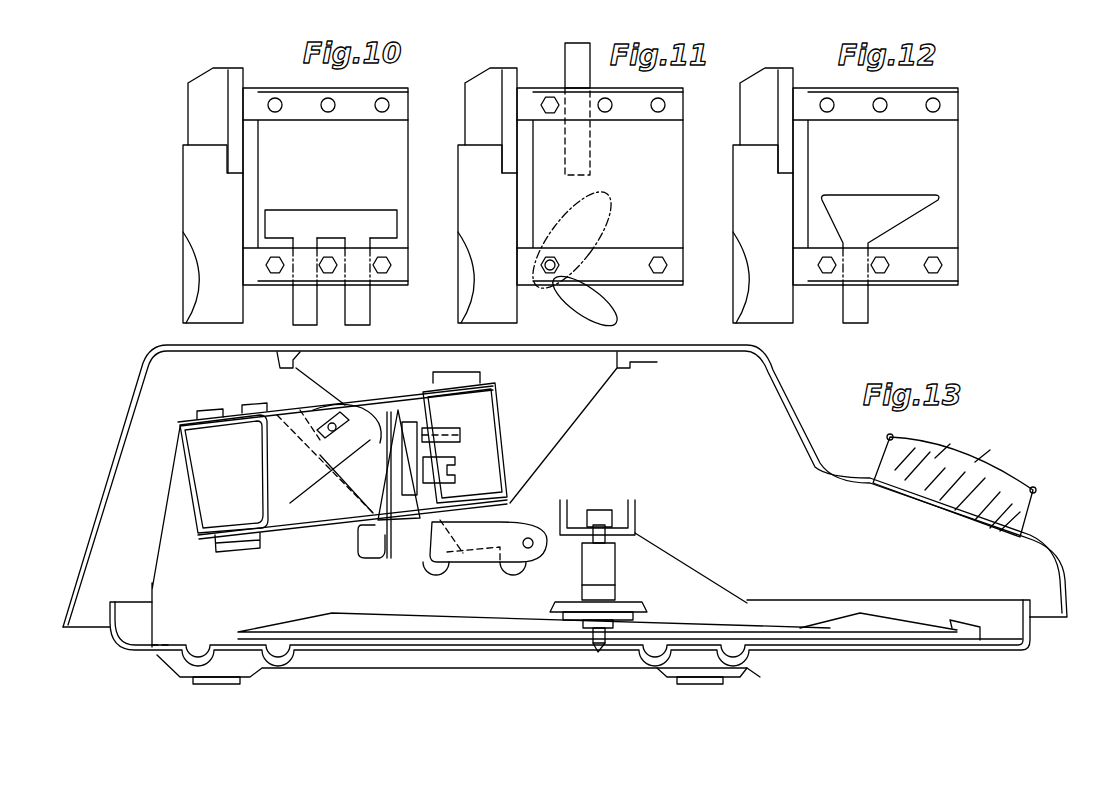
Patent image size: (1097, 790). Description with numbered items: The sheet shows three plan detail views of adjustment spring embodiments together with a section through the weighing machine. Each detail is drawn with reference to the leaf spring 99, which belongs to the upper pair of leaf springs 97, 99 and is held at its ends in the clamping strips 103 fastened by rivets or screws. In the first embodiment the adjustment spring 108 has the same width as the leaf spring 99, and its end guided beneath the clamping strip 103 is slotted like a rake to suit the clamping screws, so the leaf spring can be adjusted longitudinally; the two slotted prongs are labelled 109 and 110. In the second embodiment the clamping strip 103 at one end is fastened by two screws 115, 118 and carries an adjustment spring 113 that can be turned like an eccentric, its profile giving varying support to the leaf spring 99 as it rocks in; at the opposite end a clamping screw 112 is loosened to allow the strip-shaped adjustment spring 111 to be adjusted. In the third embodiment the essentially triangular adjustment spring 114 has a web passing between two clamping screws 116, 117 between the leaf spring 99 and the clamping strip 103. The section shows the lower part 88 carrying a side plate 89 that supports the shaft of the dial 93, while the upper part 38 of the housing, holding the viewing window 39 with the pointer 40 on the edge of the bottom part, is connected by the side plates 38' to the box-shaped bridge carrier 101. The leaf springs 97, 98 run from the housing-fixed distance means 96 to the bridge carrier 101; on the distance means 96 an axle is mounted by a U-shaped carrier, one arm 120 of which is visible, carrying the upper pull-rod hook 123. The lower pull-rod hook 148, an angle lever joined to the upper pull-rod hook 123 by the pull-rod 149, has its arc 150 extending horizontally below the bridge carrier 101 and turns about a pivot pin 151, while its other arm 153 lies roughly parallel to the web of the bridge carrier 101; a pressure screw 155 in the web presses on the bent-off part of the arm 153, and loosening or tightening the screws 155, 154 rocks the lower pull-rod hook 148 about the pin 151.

In FIG. 10, the leaf spring 99 is at (406, 137).
In FIG. 11, the leaf spring 99 is at (683, 138).
In FIG. 12, the leaf spring 99 is at (958, 157).
In FIG. 10, the clamping strip 103 is at (350, 112).
In FIG. 11, the clamping strip 103 is at (634, 116).
In FIG. 12, the clamping strip 103 is at (936, 115).
In FIG. 10, the adjustment spring 108 is at (344, 212).
In FIG. 10, the terminal leg 109 is at (292, 310).
In FIG. 10, the terminal leg 110 is at (369, 310).
In FIG. 11, the adjustment spring 111 is at (591, 80).
In FIG. 11, the clamping screw 112 is at (550, 96).
In FIG. 11, the adjustment spring 113 is at (586, 288).
In FIG. 12, the adjustment spring 114 is at (860, 222).
In FIG. 11, the screw 115 is at (658, 276).
In FIG. 12, the clamping screw 116 is at (826, 281).
In FIG. 12, the clamping screw 117 is at (882, 281).
In FIG. 11, the screw 118 is at (558, 300).
In FIG. 13, the upper part of the housing 38 is at (565, 505).
In FIG. 13, the side plate 38' is at (583, 427).
In FIG. 13, the viewing window 39 is at (992, 486).
In FIG. 13, the pointer 40 is at (967, 638).
In FIG. 13, the lower part 88 is at (620, 655).
In FIG. 13, the side plate 89 is at (684, 578).
In FIG. 13, the dial 93 is at (893, 632).
In FIG. 13, the distance means 96 is at (254, 472).
In FIG. 13, the leaf spring 97 is at (296, 400).
In FIG. 13, the leaf spring 98 is at (290, 538).
In FIG. 13, the bridge carrier 101 is at (435, 390).
In FIG. 13, the arm of carrier 120 is at (224, 413).
In FIG. 13, the upper pull-rod hook 123 is at (357, 410).
In FIG. 13, the lower pull-rod hook 148 is at (417, 553).
In FIG. 13, the pull-rod 149 is at (325, 464).
In FIG. 13, the arc of lower pull-rod hook 150 is at (497, 567).
In FIG. 13, the pivot pin 151 is at (533, 548).
In FIG. 13, the arm of lower pull-rod hook 153 is at (357, 528).
In FIG. 13, the screw 154 is at (457, 468).
In FIG. 13, the pressure screw 155 is at (460, 426).